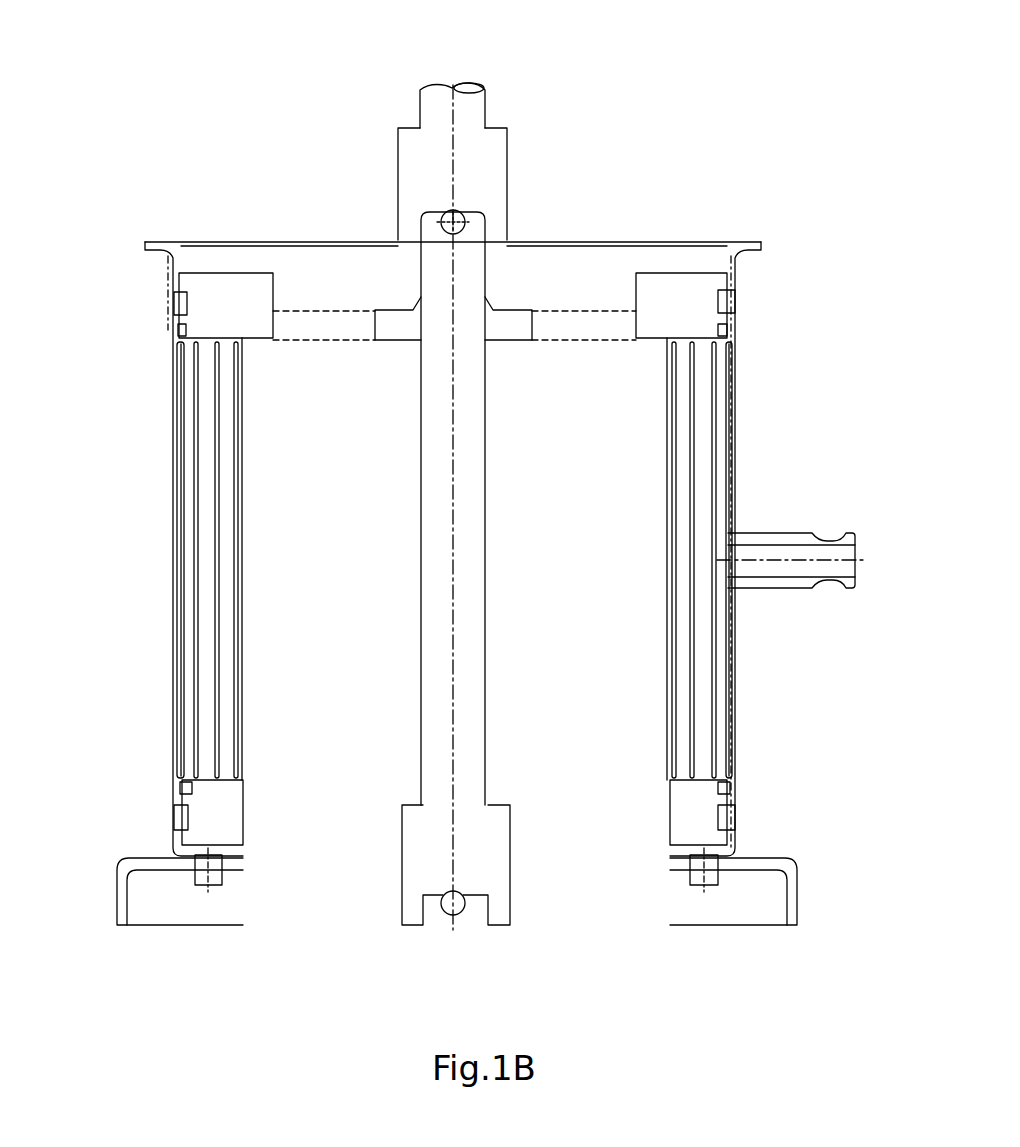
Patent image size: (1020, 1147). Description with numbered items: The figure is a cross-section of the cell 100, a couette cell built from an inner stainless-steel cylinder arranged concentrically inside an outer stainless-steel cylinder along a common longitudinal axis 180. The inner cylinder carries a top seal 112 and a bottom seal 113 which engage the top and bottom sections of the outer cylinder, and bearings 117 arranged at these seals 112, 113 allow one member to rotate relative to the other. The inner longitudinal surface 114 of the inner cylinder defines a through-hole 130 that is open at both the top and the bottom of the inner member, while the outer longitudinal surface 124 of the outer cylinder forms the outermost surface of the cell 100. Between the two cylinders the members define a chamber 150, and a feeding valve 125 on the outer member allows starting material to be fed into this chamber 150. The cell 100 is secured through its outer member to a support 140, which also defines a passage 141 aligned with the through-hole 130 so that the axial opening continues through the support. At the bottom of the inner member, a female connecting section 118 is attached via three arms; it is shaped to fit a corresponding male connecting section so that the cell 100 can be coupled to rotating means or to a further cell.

The cell 100 is at (268, 86).
The top seal 112 is at (168, 331).
The bottom seal 113 is at (167, 786).
The inner longitudinal surface 114 is at (257, 522).
The bearings 117 is at (168, 302).
The female connecting section 118 is at (470, 897).
The outer longitudinal surface 124 is at (160, 418).
The feeding valve 125 is at (790, 520).
The through-hole 130 is at (323, 340).
The support 140 is at (150, 915).
The passage 141 is at (320, 887).
The chamber 150 is at (190, 594).
The longitudinal axis 180 is at (469, 418).